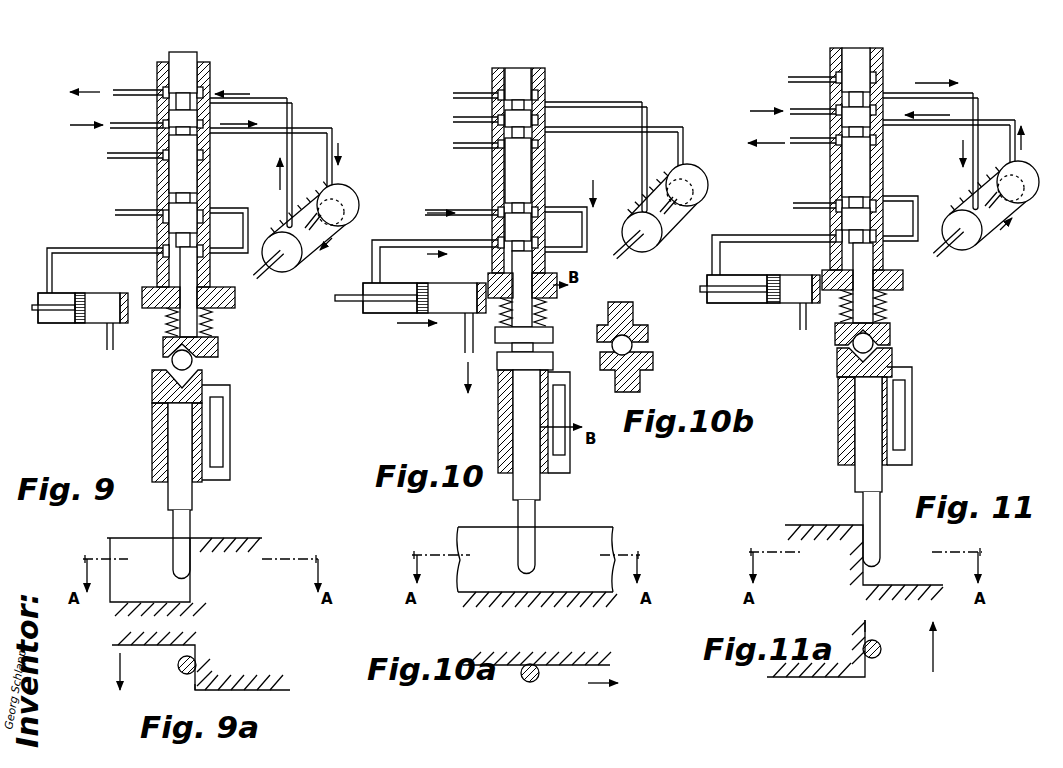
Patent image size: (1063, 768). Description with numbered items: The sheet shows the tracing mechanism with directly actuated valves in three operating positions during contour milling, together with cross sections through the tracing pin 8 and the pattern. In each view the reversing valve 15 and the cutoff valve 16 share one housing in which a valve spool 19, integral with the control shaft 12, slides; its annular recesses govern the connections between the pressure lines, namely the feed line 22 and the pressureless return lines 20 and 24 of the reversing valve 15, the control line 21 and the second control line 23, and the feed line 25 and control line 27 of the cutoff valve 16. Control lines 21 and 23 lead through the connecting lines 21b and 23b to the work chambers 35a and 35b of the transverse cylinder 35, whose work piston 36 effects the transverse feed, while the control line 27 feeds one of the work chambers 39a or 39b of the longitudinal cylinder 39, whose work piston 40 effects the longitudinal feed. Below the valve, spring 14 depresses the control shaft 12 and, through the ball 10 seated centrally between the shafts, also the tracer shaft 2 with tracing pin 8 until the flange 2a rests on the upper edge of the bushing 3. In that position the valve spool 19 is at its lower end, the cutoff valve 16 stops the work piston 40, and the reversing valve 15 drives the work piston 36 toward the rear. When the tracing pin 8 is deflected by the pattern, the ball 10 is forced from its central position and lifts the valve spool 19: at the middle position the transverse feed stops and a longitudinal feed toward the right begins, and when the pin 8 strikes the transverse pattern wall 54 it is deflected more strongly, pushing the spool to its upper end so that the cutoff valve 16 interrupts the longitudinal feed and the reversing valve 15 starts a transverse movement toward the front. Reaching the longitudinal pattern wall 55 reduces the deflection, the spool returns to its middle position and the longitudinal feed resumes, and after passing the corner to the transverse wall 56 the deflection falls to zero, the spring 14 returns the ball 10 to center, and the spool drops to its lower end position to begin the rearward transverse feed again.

In FIG. 9, the tracer shaft 2 is at (178, 494).
In FIG. 10, the tracer shaft 2 is at (525, 489).
In FIG. 11, the tracer shaft 2 is at (862, 486).
In FIG. 9, the flange 2a is at (152, 378).
In FIG. 10, the flange 2a is at (546, 361).
In FIG. 11, the flange 2a is at (838, 357).
In FIG. 9, the bushing 3 is at (152, 445).
In FIG. 10, the bushing 3 is at (498, 441).
In FIG. 11, the bushing 3 is at (838, 431).
In FIG. 9, the tracing pin 8 is at (176, 520).
In FIG. 9A, the tracing pin 8 is at (178, 665).
In FIG. 10, the tracing pin 8 is at (525, 515).
In FIG. 10A, the tracing pin 8 is at (541, 677).
In FIG. 11, the tracing pin 8 is at (860, 510).
In FIG. 11A, the tracing pin 8 is at (882, 649).
In FIG. 9, the ball 10 is at (194, 361).
In FIG. 10B, the ball 10 is at (633, 345).
In FIG. 11, the ball 10 is at (875, 345).
In FIG. 9, the control shaft 12 is at (187, 314).
In FIG. 10, the control shaft 12 is at (527, 305).
In FIG. 11, the control shaft 12 is at (875, 304).
In FIG. 9, the spring 14 is at (213, 334).
In FIG. 10, the spring 14 is at (546, 324).
In FIG. 11, the spring 14 is at (889, 321).
In FIG. 9, the reversing valve 15 is at (213, 66).
In FIG. 10, the reversing valve 15 is at (548, 78).
In FIG. 11, the reversing valve 15 is at (886, 53).
In FIG. 9, the cutoff valve 16 is at (213, 274).
In FIG. 10, the cutoff valve 16 is at (549, 259).
In FIG. 11, the cutoff valve 16 is at (886, 259).
In FIG. 9, the valve spool 19 is at (185, 176).
In FIG. 10, the valve spool 19 is at (515, 174).
In FIG. 11, the valve spool 19 is at (860, 169).
In FIG. 9, the pressureless return line 20 is at (139, 90).
In FIG. 10, the pressureless return line 20 is at (472, 94).
In FIG. 11, the pressureless return line 20 is at (807, 77).
In FIG. 9, the control line 21 is at (290, 97).
In FIG. 10, the control line 21 is at (647, 101).
In FIG. 11, the control line 21 is at (976, 92).
In FIG. 9, the connecting line 21b is at (292, 98).
In FIG. 10, the connecting line 21b is at (648, 102).
In FIG. 11, the connecting line 21b is at (977, 93).
In FIG. 9, the feed line 22 is at (139, 123).
In FIG. 10, the feed line 22 is at (472, 118).
In FIG. 11, the feed line 22 is at (807, 109).
In FIG. 9, the second control line 23 is at (331, 128).
In FIG. 10, the second control line 23 is at (682, 126).
In FIG. 11, the second control line 23 is at (1011, 119).
In FIG. 9, the connecting line 23b is at (332, 128).
In FIG. 10, the connecting line 23b is at (683, 127).
In FIG. 11, the connecting line 23b is at (1012, 120).
In FIG. 9, the pressureless return line 24 is at (139, 153).
In FIG. 10, the pressureless return line 24 is at (472, 144).
In FIG. 11, the pressureless return line 24 is at (808, 139).
In FIG. 9, the feed line 25 is at (143, 210).
In FIG. 10, the feed line 25 is at (477, 211).
In FIG. 11, the feed line 25 is at (810, 203).
In FIG. 9, the control line 27 is at (58, 248).
In FIG. 10, the control line 27 is at (440, 247).
In FIG. 11, the control line 27 is at (753, 235).
In FIG. 9, the transverse cylinder 35 is at (283, 275).
In FIG. 10, the transverse cylinder 35 is at (642, 255).
In FIG. 11, the transverse cylinder 35 is at (962, 253).
In FIG. 9, the work chamber 35a is at (301, 262).
In FIG. 10, the work chamber 35a is at (663, 244).
In FIG. 11, the work chamber 35a is at (980, 240).
In FIG. 9, the work chamber 35b is at (346, 205).
In FIG. 10, the work chamber 35b is at (697, 185).
In FIG. 11, the work chamber 35b is at (1028, 205).
In FIG. 9, the work piston 36 is at (320, 190).
In FIG. 10, the work piston 36 is at (684, 210).
In FIG. 11, the work piston 36 is at (990, 188).
In FIG. 9, the longitudinal cylinder 39 is at (115, 292).
In FIG. 10, the longitudinal cylinder 39 is at (368, 316).
In FIG. 11, the longitudinal cylinder 39 is at (713, 308).
In FIG. 9, the work chamber 39a is at (50, 324).
In FIG. 10, the work chamber 39a is at (383, 310).
In FIG. 11, the work chamber 39a is at (737, 297).
In FIG. 9, the work chamber 39b is at (97, 324).
In FIG. 10, the work chamber 39b is at (447, 310).
In FIG. 11, the work chamber 39b is at (791, 292).
In FIG. 9, the work piston 40 is at (80, 295).
In FIG. 10, the work piston 40 is at (423, 290).
In FIG. 11, the work piston 40 is at (773, 278).
In FIG. 9A, the transverse pattern wall 54 is at (195, 685).
In FIG. 9A, the longitudinal pattern wall 55 is at (250, 684).
In FIG. 10A, the longitudinal pattern wall 55 is at (488, 667).
In FIG. 11A, the longitudinal pattern wall 55 is at (817, 677).
In FIG. 11A, the transverse wall 56 is at (865, 622).